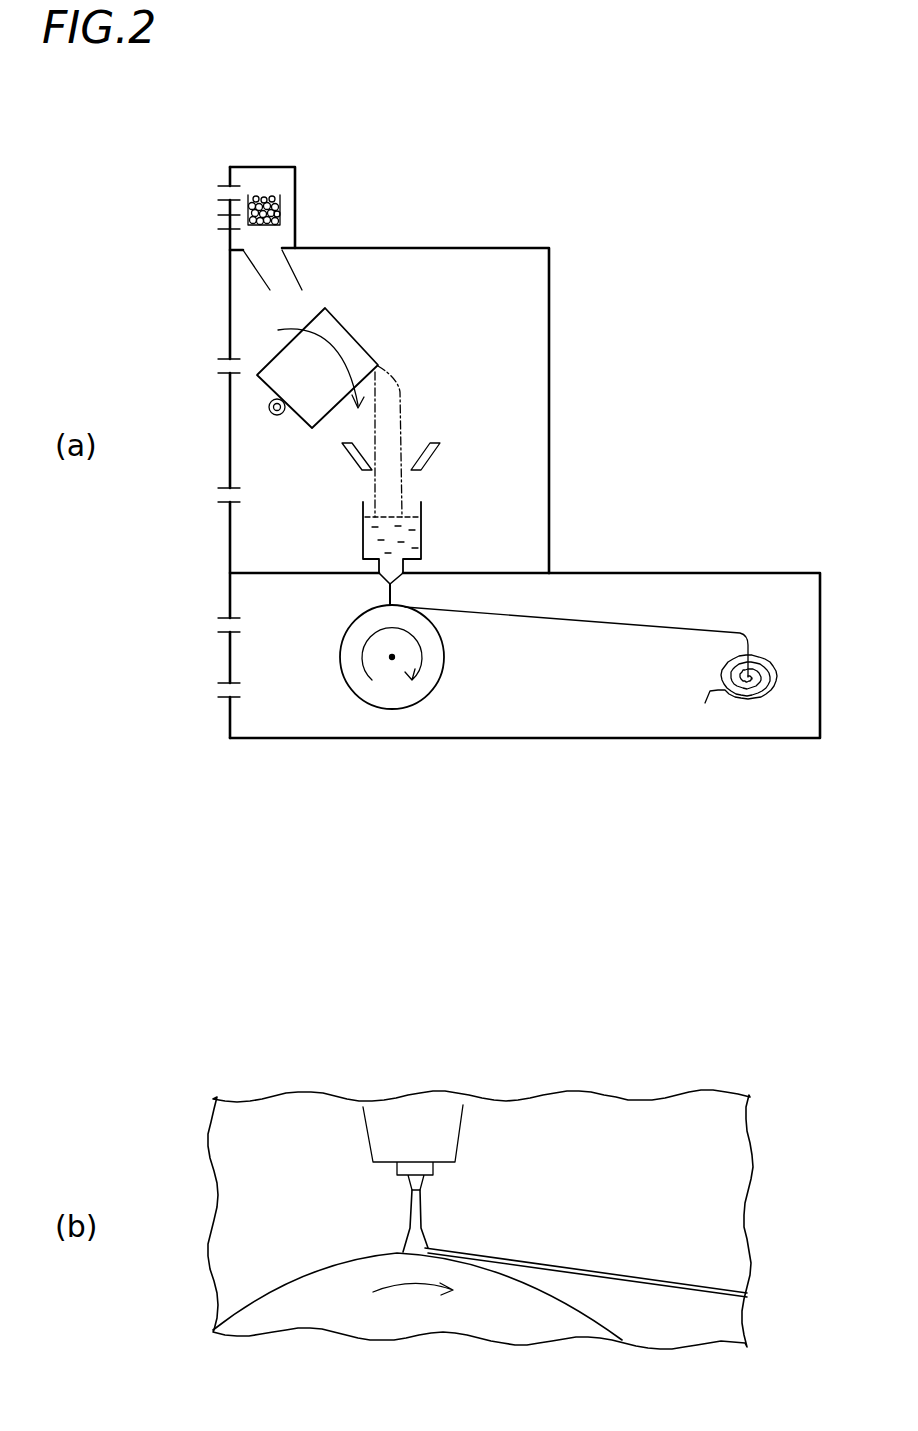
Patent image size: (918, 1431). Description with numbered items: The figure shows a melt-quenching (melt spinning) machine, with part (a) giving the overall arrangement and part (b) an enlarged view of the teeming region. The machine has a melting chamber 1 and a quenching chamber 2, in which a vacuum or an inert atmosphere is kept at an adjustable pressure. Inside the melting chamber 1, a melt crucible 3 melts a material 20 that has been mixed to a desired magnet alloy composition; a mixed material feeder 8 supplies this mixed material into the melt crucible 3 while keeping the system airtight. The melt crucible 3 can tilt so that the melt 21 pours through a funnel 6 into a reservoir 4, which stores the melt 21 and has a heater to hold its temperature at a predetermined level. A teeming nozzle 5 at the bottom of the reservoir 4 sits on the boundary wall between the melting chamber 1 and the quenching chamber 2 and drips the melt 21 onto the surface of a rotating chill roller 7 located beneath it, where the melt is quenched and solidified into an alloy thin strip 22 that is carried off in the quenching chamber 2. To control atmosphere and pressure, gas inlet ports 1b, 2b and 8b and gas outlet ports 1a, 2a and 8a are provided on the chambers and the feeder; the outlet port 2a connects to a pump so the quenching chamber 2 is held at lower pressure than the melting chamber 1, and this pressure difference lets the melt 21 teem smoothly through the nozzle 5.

The melting chamber 1 is at (549, 318).
The gas outlet port 1a is at (242, 495).
The gas inlet port 1b is at (236, 370).
The quenching chamber 2 is at (687, 573).
The gas outlet port 2a is at (242, 690).
The gas inlet port 2b is at (236, 629).
The melt crucible 3 is at (322, 393).
The reservoir 4 is at (421, 535).
The teeming nozzle 5 is at (386, 585).
The funnel 6 is at (346, 452).
The chill roller 7 is at (340, 652).
The mixed material feeder 8 is at (254, 167).
The gas outlet port 8a is at (242, 222).
The gas inlet port 8b is at (236, 197).
The material 20 is at (280, 207).
The melt 21 is at (363, 535).
The alloy thin strip 22 is at (525, 618).